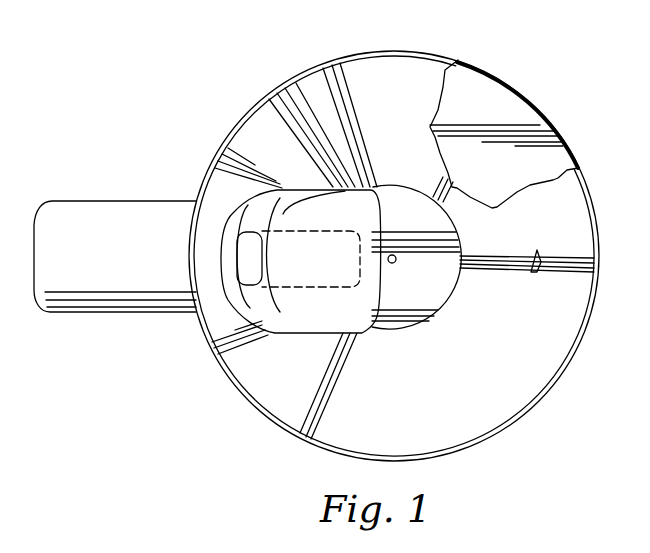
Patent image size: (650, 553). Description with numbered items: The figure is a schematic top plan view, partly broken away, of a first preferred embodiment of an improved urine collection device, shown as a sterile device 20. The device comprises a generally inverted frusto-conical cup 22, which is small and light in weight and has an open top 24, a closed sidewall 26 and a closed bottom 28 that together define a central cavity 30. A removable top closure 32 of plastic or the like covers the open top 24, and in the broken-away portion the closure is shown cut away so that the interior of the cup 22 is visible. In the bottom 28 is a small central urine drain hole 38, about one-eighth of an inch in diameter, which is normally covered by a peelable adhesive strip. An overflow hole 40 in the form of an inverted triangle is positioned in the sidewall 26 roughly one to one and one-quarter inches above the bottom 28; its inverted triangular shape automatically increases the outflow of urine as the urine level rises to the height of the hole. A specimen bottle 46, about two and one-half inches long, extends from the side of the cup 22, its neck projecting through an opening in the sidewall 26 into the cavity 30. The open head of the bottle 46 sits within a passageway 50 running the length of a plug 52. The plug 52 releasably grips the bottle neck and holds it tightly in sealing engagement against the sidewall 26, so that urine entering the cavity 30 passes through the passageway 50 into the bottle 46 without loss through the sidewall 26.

The sterile device 20 is at (141, 9).
The cup 22 is at (266, 84).
The open top 24 is at (373, 70).
The sidewall 26 is at (237, 397).
The bottom 28 is at (403, 325).
The central cavity 30 is at (390, 117).
The top closure 32 is at (497, 103).
The urine drain hole 38 is at (394, 263).
The overflow hole 40 is at (532, 268).
The specimen bottle 46 is at (125, 196).
The passageway 50 is at (247, 243).
The plug 52 is at (302, 184).